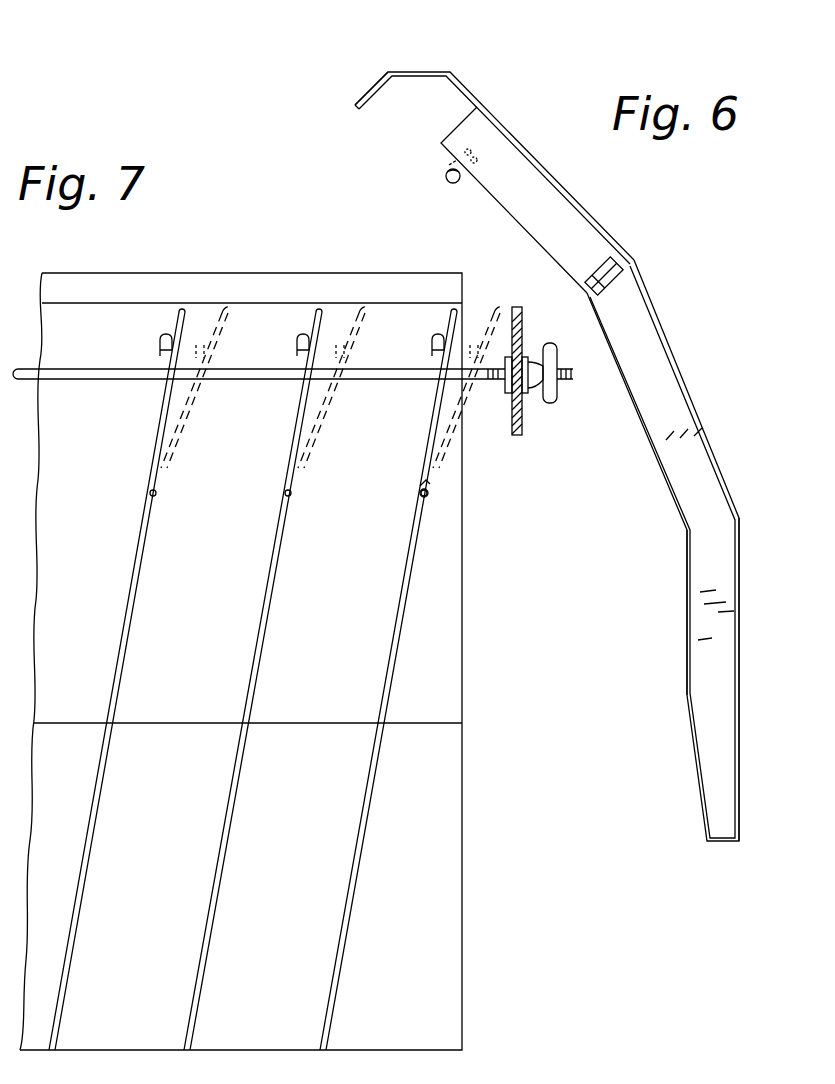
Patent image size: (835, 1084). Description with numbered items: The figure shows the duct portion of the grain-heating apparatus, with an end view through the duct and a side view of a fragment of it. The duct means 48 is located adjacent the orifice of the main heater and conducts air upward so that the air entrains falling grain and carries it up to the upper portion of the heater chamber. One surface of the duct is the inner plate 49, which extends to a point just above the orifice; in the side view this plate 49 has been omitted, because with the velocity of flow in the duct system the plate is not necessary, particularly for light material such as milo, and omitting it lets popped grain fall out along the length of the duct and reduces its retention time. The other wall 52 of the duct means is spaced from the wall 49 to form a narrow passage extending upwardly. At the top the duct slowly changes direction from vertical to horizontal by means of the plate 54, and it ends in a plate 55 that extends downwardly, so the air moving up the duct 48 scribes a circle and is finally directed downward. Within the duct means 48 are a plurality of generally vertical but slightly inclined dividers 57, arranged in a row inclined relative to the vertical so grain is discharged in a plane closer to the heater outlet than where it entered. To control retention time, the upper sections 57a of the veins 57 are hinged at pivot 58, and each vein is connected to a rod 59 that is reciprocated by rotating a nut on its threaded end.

In FIG. 7, the duct means 48 is at (468, 860).
In FIG. 6, the inner plate 49 is at (676, 510).
In FIG. 6, the wall 52 is at (733, 500).
In FIG. 7, the wall 52 is at (114, 1001).
In FIG. 6, the plate 54 is at (415, 72).
In FIG. 6, the plate 55 is at (364, 96).
In FIG. 6, the dividers 57 is at (718, 652).
In FIG. 7, the dividers 57 is at (252, 677).
In FIG. 6, the upper sections 57a is at (533, 212).
In FIG. 7, the upper sections 57a is at (437, 452).
In FIG. 6, the pivot 58 is at (620, 284).
In FIG. 7, the pivot 58 is at (432, 494).
In FIG. 6, the rod 59 is at (446, 178).
In FIG. 7, the rod 59 is at (246, 381).